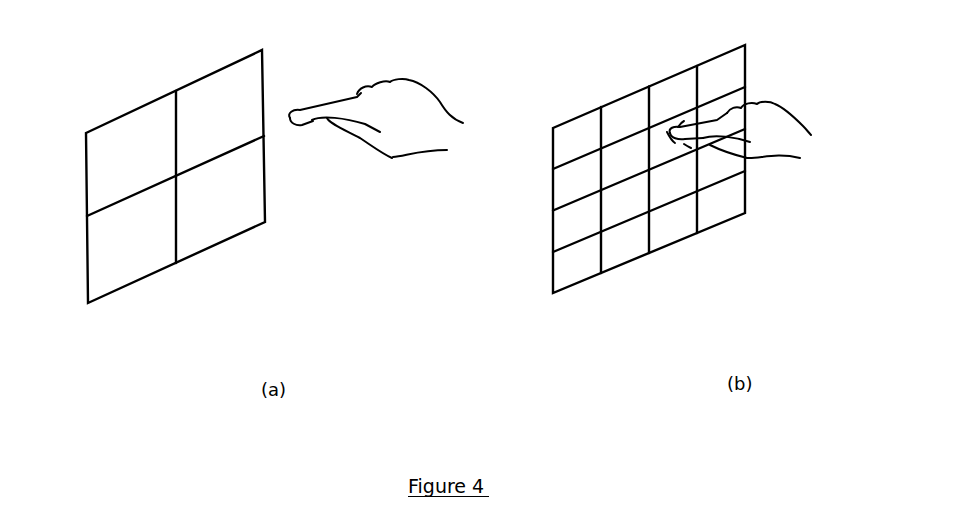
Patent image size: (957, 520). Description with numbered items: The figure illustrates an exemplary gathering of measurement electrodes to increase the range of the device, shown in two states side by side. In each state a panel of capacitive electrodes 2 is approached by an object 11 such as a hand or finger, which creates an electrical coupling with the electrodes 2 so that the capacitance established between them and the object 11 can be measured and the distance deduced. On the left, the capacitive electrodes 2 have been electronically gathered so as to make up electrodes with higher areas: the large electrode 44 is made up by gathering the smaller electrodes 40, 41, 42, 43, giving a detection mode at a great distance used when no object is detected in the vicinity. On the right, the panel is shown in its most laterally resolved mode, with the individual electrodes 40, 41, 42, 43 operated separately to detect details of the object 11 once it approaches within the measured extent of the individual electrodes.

The capacitive electrodes 2 is at (145, 122).
The object 11 is at (392, 158).
The electrode 44 is at (130, 250).
The electrode 40 is at (625, 245).
The electrode 41 is at (587, 268).
The electrode 42 is at (568, 220).
The electrode 43 is at (623, 213).